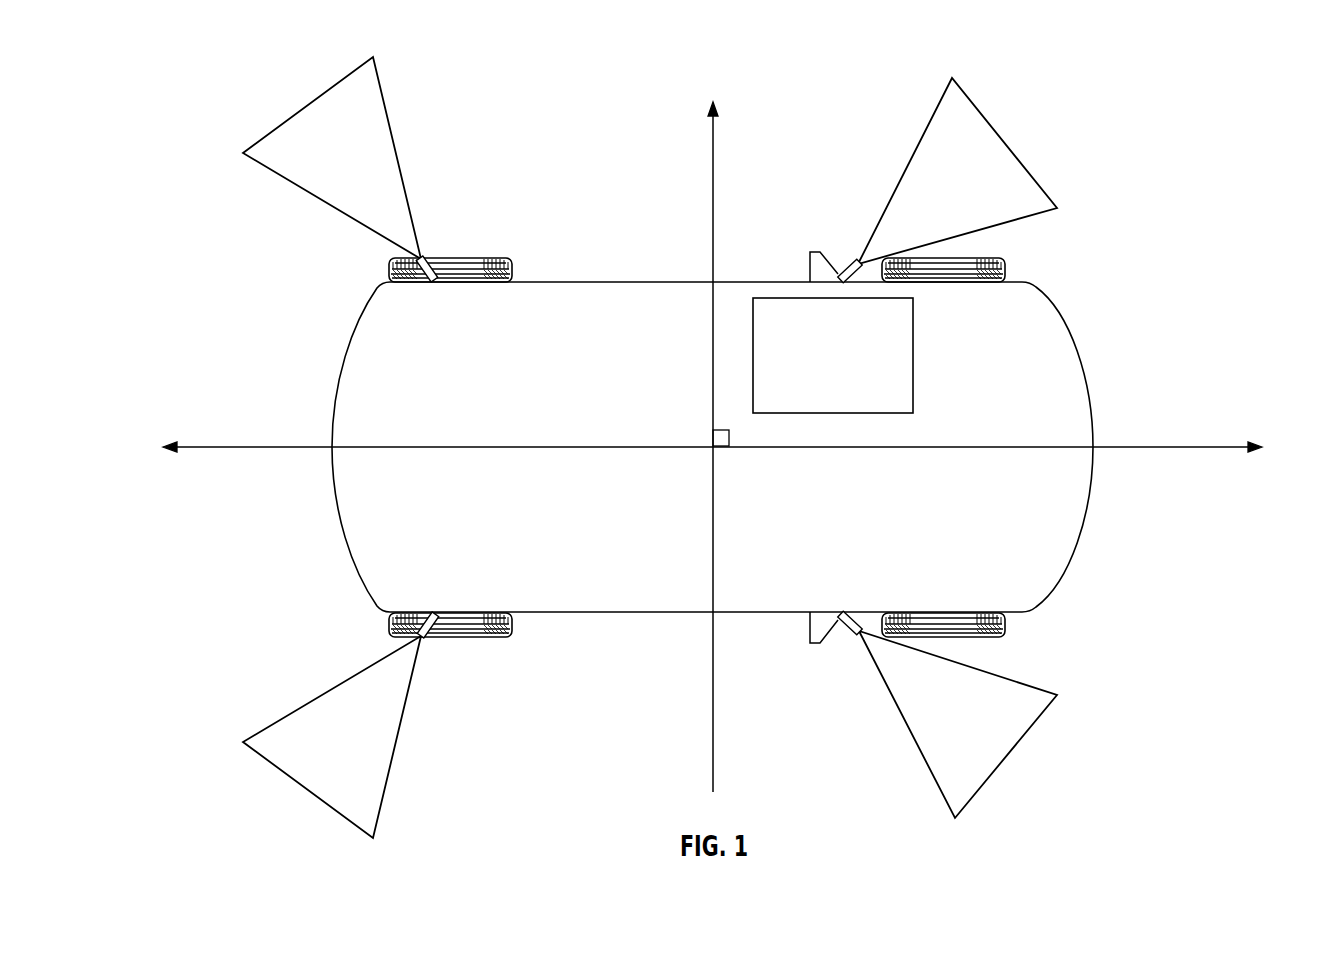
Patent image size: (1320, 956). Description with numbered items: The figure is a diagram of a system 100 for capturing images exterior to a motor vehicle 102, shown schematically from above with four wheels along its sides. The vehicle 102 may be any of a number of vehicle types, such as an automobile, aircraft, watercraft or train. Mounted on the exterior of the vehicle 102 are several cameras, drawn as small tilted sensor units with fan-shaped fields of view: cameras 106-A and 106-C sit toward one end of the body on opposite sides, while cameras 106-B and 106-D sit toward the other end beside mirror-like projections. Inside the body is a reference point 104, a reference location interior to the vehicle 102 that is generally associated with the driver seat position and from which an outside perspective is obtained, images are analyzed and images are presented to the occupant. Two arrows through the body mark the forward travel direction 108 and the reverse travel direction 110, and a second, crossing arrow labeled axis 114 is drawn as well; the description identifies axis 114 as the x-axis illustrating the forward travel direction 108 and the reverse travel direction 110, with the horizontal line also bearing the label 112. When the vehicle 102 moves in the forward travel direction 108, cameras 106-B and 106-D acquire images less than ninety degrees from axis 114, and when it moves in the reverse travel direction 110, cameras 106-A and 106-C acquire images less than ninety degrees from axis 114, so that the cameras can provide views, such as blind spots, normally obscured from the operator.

The system 100 is at (237, 73).
The motor vehicle 102 is at (1064, 303).
The reference point 104 is at (852, 366).
The camera 106-A is at (438, 262).
The camera 106-B is at (843, 265).
The camera 106-C is at (438, 631).
The camera 106-D is at (843, 630).
The forward travel direction 108 is at (1277, 449).
The reverse travel direction 110 is at (149, 450).
The longitudinal axis 112 is at (1236, 448).
The axis 114 is at (716, 126).